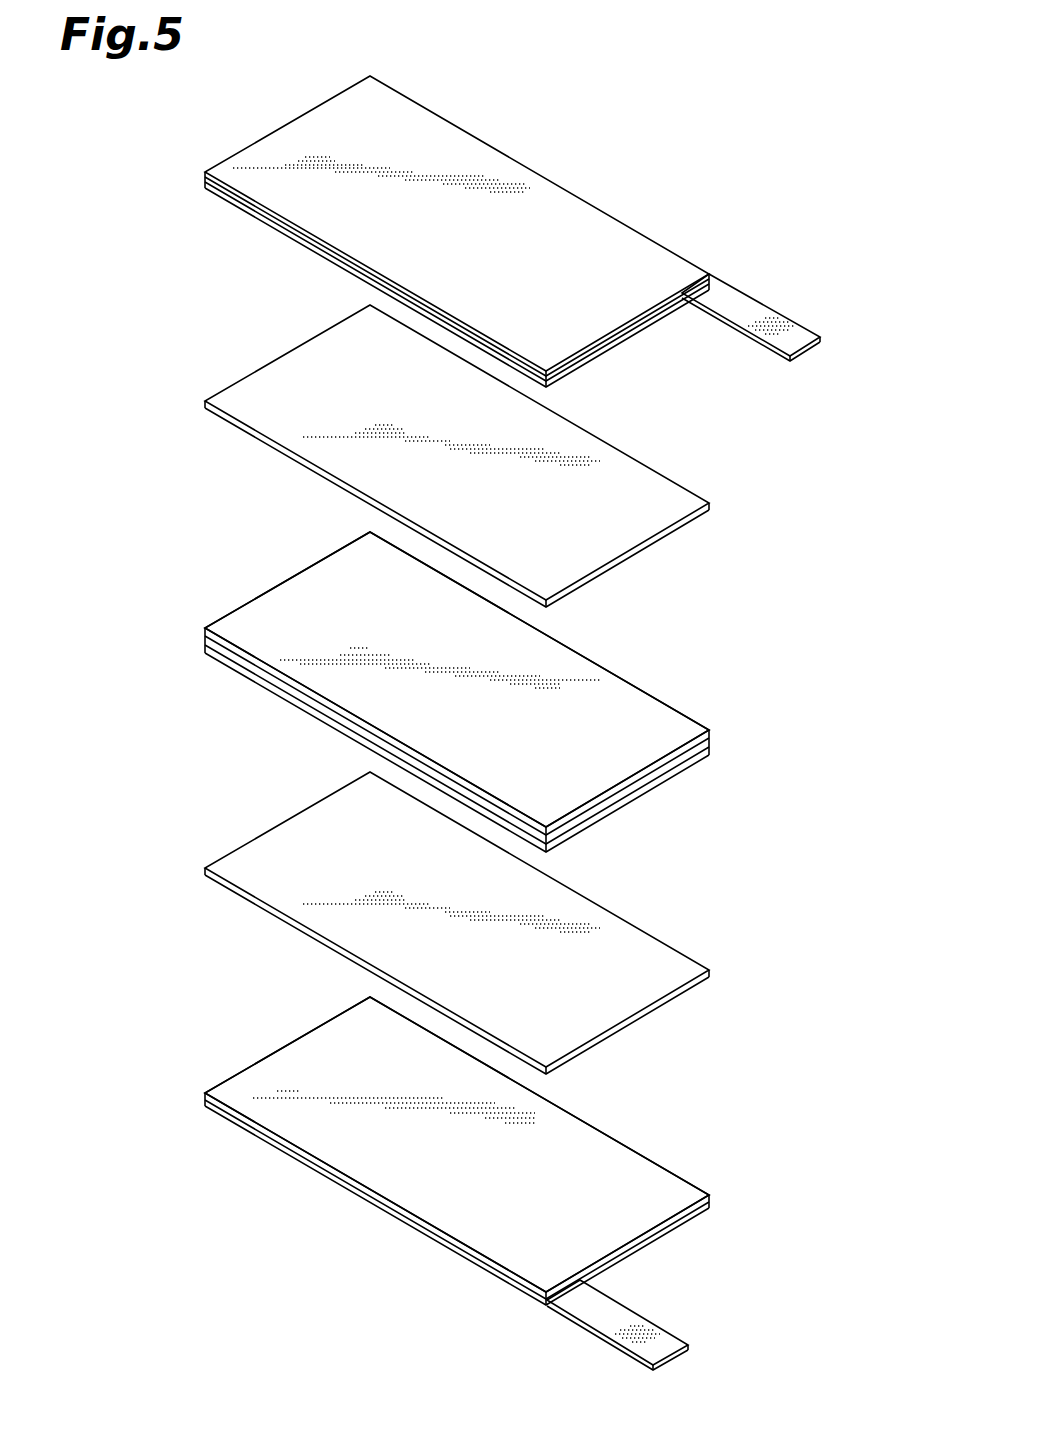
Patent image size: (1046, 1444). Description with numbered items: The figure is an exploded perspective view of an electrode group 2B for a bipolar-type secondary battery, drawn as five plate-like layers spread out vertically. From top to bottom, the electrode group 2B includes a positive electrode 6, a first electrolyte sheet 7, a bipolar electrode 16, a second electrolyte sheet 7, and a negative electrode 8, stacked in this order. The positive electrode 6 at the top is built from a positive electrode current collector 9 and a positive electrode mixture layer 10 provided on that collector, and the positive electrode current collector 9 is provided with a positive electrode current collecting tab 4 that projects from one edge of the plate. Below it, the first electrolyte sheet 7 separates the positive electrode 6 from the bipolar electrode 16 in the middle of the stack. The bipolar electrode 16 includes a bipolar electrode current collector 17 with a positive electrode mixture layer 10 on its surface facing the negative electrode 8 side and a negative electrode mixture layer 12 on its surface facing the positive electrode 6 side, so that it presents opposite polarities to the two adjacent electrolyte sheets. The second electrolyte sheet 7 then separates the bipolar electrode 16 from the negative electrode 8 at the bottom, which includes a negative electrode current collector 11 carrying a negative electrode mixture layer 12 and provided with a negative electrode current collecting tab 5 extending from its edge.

The electrode group 2B is at (783, 158).
The positive electrode current collecting tab 4 is at (798, 340).
The negative electrode current collecting tab 5 is at (600, 1315).
The positive electrode 6 is at (688, 243).
The electrolyte sheet 7 is at (685, 495).
The negative electrode 8 is at (722, 1148).
The positive electrode current collector 9 is at (425, 133).
The positive electrode mixture layer 10 is at (632, 337).
The negative electrode current collector 11 is at (668, 1233).
The negative electrode mixture layer 12 is at (658, 720).
The bipolar electrode 16 is at (755, 710).
The bipolar electrode current collector 17 is at (713, 738).